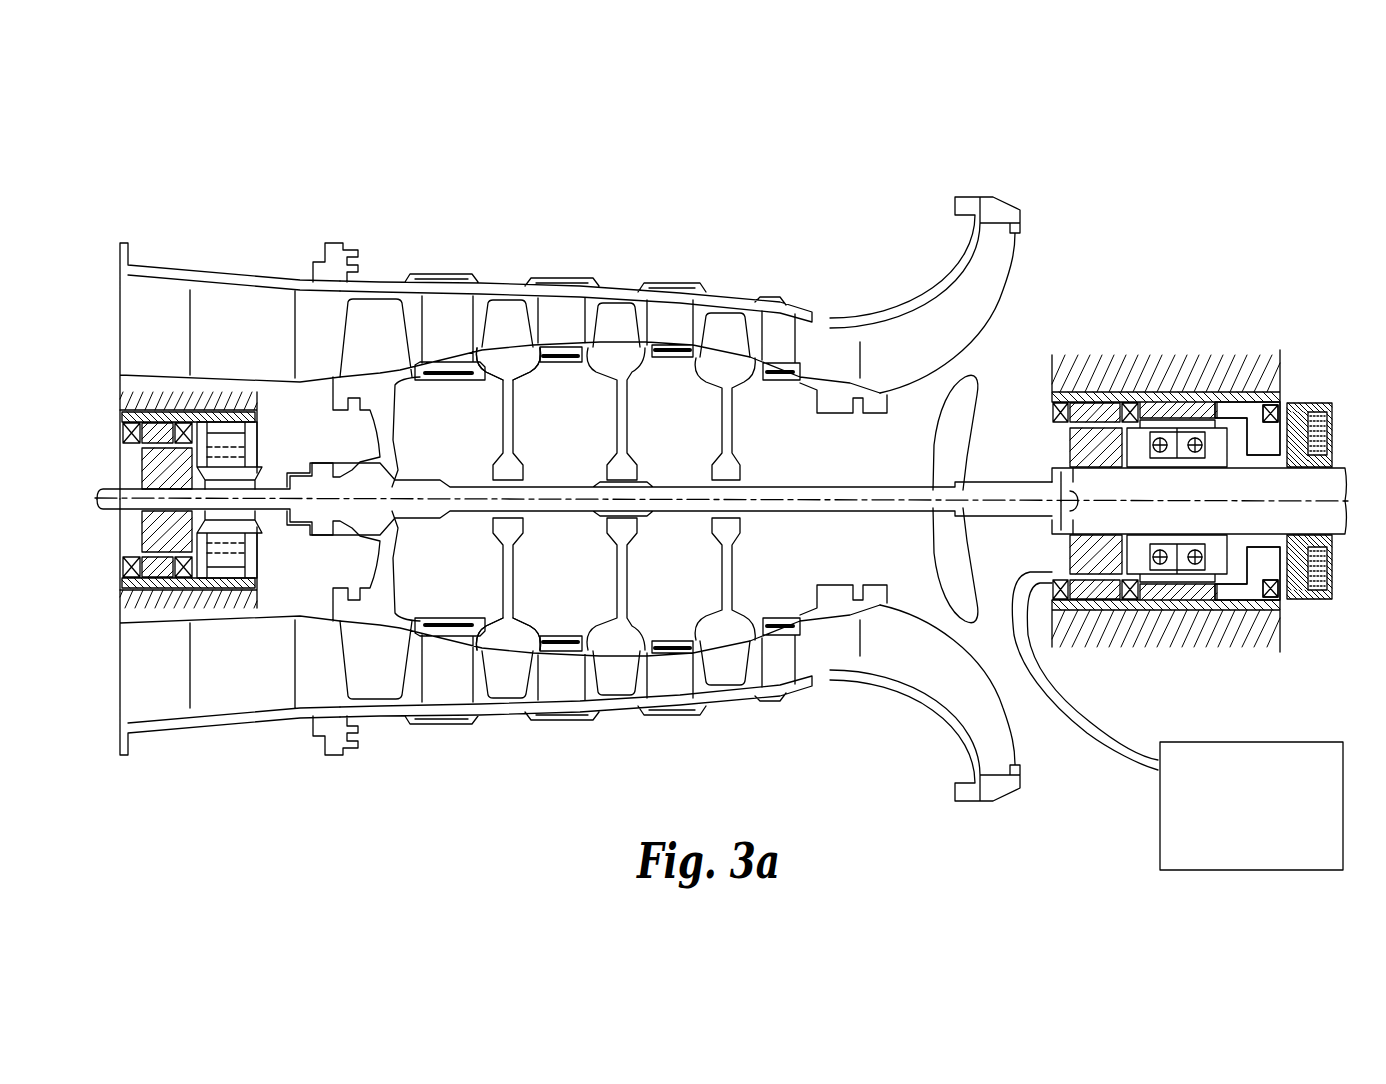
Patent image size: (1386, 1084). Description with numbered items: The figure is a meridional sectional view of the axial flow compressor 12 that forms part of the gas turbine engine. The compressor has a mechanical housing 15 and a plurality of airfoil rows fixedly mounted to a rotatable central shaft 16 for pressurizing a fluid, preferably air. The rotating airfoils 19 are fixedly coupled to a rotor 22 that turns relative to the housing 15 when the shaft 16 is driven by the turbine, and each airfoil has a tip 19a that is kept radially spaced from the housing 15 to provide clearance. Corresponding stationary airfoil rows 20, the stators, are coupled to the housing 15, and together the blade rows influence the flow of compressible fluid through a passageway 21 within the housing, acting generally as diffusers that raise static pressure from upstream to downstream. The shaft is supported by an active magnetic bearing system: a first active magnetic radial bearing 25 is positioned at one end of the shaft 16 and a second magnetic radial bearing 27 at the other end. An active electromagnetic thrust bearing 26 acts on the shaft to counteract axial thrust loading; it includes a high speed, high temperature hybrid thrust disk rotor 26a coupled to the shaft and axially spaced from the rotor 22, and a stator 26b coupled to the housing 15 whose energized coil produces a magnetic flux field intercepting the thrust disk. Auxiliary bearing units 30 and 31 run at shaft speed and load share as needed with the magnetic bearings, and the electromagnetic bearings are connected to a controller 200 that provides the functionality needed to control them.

The axial flow compressor 12 is at (826, 195).
The mechanical housing 15 is at (386, 280).
The rotatable central shaft 16 is at (975, 387).
The airfoils 19 is at (507, 317).
The tip 19a is at (503, 315).
The stationary airfoil rows 20 is at (448, 690).
The passageway 21 is at (306, 302).
The rotor 22 is at (385, 553).
The first active magnetic radial bearing 25 is at (1014, 588).
The active electromagnetic thrust bearing 26 is at (1333, 563).
The hybrid thrust disk rotor 26a is at (1332, 425).
The stator 26b is at (1263, 430).
The second magnetic radial bearing 27 is at (157, 545).
The auxiliary bearing unit 30 is at (1180, 427).
The auxiliary bearing unit 31 is at (243, 552).
The controller 200 is at (1335, 863).